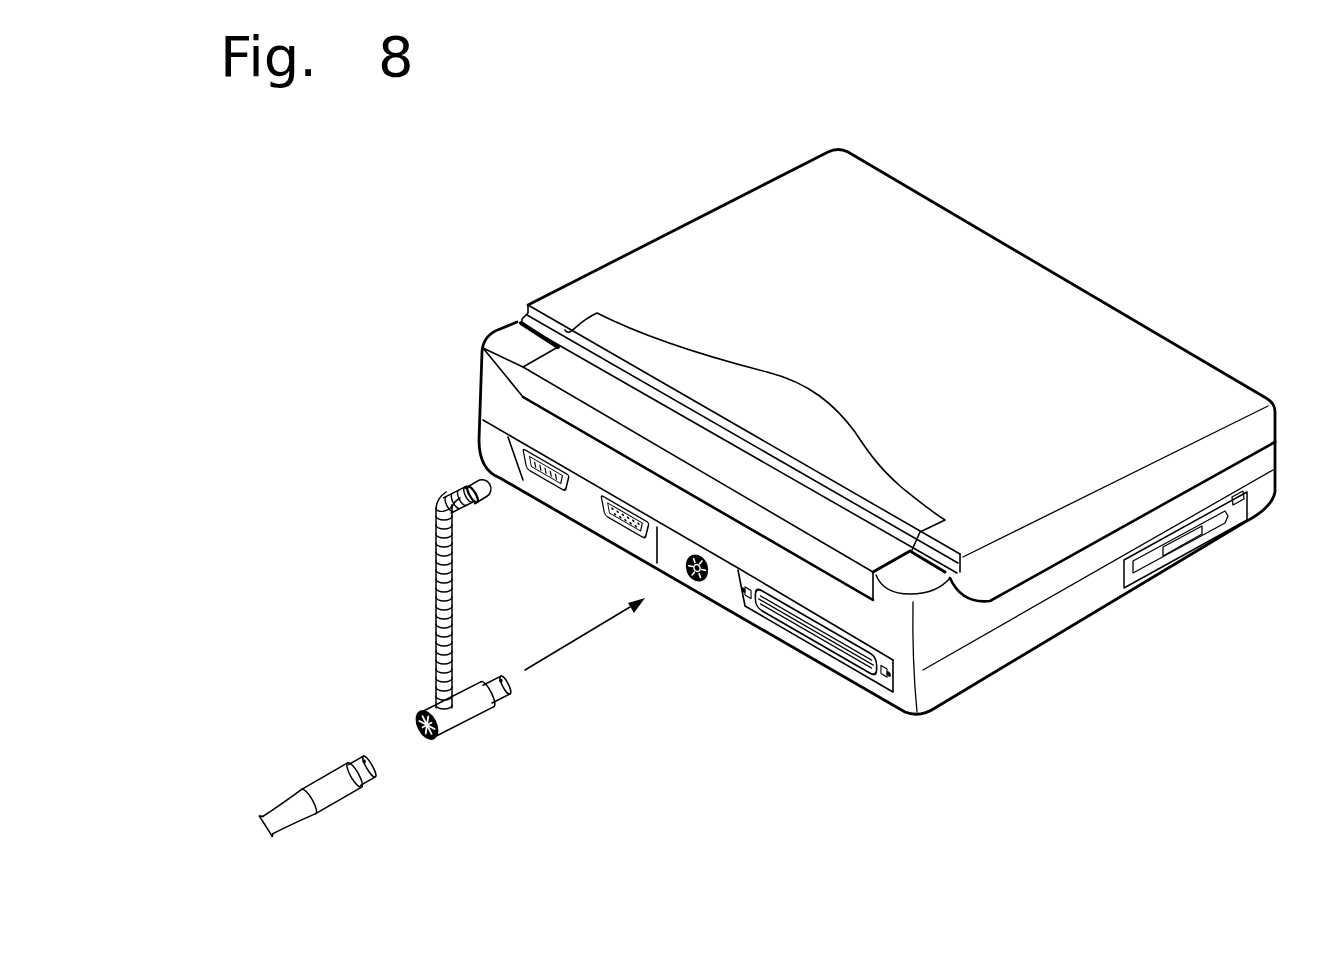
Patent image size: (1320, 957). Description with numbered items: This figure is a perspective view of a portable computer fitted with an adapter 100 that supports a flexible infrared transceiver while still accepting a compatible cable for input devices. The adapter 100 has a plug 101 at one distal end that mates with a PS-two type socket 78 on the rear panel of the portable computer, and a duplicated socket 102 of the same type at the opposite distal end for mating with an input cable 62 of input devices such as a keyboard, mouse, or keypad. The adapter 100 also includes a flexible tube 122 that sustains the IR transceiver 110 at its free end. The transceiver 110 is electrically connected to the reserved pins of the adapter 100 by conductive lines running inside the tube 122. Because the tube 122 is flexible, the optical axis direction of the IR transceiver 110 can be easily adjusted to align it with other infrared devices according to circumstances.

The input cable 62 is at (348, 808).
The PS/2 type socket 78 is at (701, 588).
The adapter 100 is at (482, 615).
The plug 101 is at (511, 688).
The duplicated PS/2 type socket 102 is at (427, 741).
The IR transceiver 110 is at (458, 481).
The flexible tube 122 is at (437, 655).